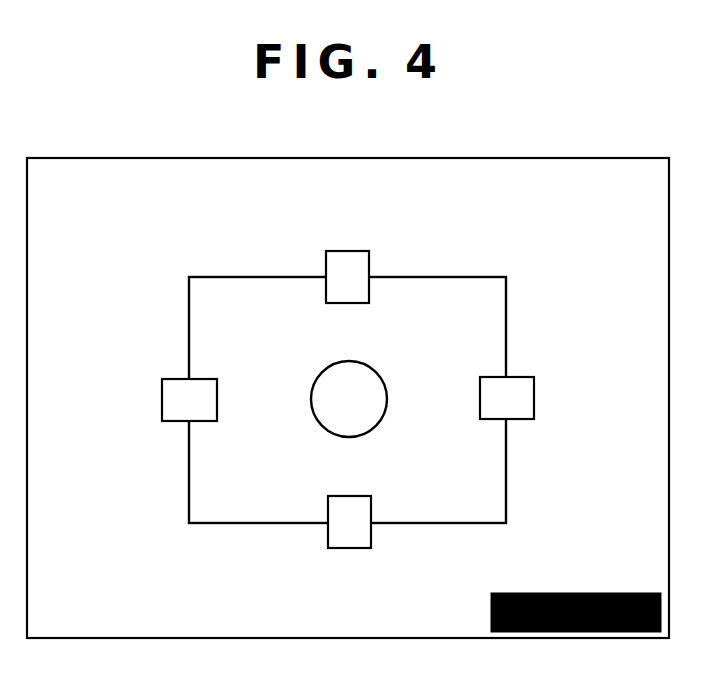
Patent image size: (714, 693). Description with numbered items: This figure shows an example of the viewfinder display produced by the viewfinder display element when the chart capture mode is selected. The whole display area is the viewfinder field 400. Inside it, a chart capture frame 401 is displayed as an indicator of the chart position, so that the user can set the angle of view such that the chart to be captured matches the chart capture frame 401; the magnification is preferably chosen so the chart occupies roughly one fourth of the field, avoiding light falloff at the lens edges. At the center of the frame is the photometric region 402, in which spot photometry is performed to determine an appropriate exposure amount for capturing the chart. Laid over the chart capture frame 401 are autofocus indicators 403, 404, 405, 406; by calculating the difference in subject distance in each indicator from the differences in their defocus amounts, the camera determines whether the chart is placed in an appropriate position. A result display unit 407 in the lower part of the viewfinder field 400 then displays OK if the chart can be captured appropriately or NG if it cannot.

The viewfinder field 400 is at (111, 158).
The chart capture frame 401 is at (506, 290).
The photometric region 402 is at (378, 372).
The autofocus indicator 403 is at (350, 251).
The autofocus indicator 404 is at (534, 395).
The autofocus indicator 405 is at (350, 548).
The autofocus indicator 406 is at (162, 393).
The result display unit 407 is at (573, 593).